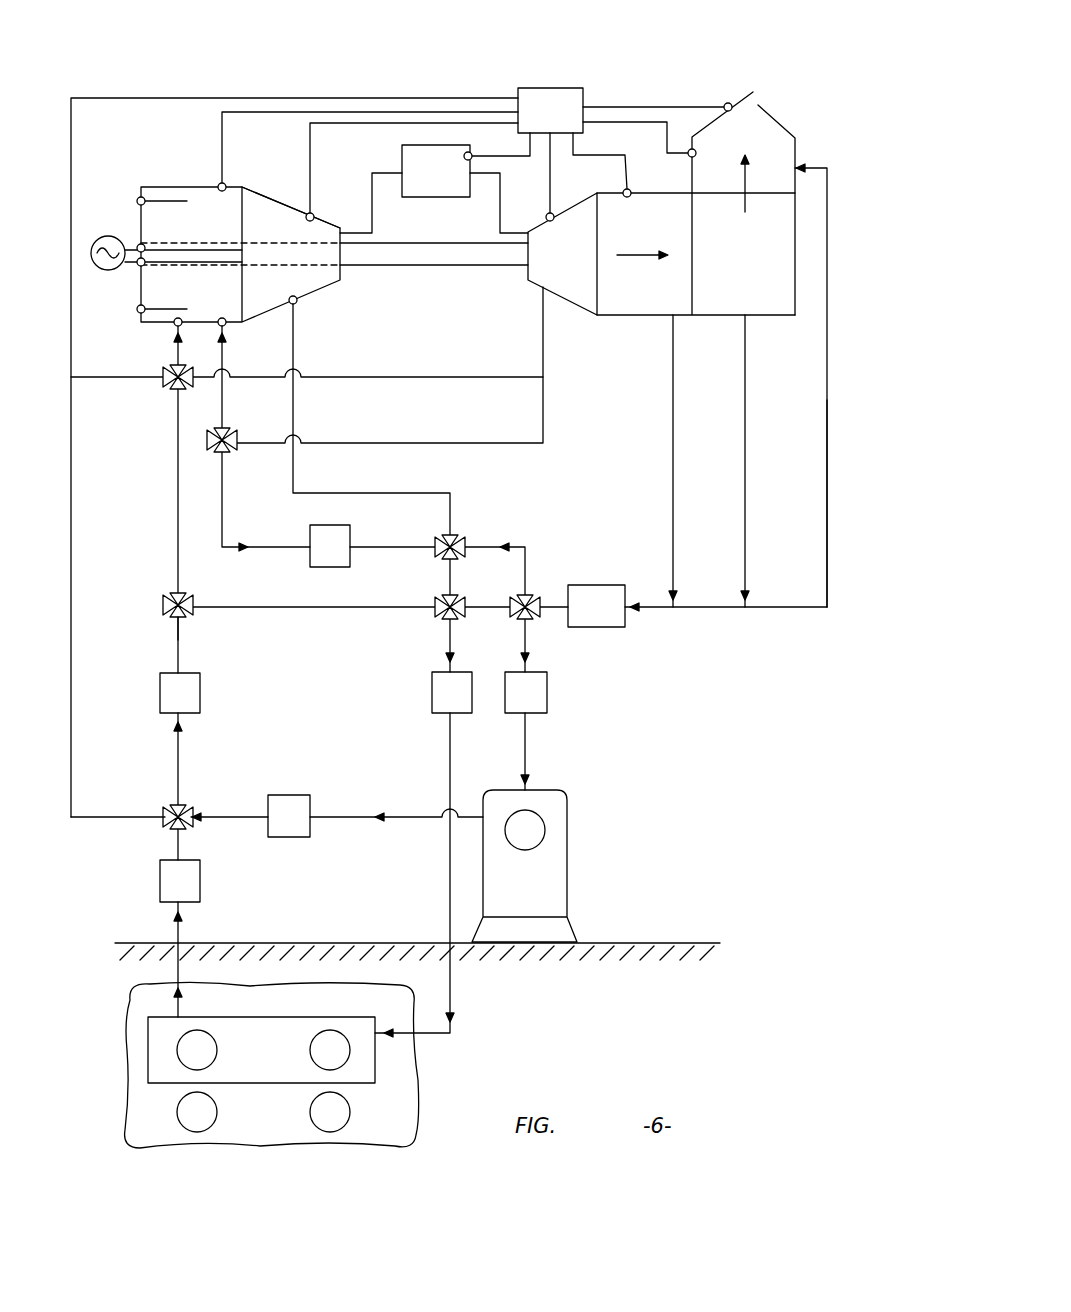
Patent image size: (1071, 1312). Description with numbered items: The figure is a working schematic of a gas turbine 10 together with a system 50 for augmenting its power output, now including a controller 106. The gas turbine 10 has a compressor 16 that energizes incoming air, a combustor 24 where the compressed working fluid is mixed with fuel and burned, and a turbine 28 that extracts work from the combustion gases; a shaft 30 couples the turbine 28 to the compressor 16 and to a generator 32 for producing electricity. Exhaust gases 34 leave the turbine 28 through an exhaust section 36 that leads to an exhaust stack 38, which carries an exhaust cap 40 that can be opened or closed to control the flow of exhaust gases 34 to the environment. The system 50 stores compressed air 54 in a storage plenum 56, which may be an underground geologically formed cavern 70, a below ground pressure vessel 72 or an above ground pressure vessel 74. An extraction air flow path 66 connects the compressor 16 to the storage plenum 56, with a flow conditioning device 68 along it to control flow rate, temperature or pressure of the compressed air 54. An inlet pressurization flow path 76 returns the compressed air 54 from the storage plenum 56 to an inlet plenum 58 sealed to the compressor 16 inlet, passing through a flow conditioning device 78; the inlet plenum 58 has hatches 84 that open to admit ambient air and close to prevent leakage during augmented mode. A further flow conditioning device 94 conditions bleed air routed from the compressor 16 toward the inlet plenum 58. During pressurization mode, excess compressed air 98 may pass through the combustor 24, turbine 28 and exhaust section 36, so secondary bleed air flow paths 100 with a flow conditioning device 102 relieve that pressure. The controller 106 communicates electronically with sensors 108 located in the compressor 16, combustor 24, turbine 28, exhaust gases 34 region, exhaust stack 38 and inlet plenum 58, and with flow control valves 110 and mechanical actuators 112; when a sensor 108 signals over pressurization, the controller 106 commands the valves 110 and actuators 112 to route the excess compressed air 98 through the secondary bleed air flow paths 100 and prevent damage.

The gas turbine 10 is at (322, 80).
The compressor 16 is at (282, 232).
The combustor 24 is at (450, 184).
The turbine 28 is at (574, 262).
The shaft 30 is at (397, 250).
The generator 32 is at (100, 240).
The exhaust gases 34 is at (627, 255).
The exhaust section 36 is at (761, 269).
The exhaust stack 38 is at (797, 158).
The exhaust cap 40 is at (743, 96).
The system 50 is at (150, 622).
The compressed air 54 is at (225, 375).
The storage plenum 56 is at (539, 892).
The inlet plenum 58 is at (243, 186).
The extraction air flow path 66 is at (300, 305).
The flow conditioning device 68 is at (464, 704).
The underground geologically formed cavern 70 is at (130, 1118).
The below ground pressure vessel 72 is at (147, 1068).
The above ground pressure vessel 74 is at (570, 872).
The inlet pressurization flow path 76 is at (152, 390).
The flow conditioning device 78 is at (192, 705).
The hatches 84 is at (141, 200).
The flow conditioning device 94 is at (344, 560).
The excess compressed air 98 is at (746, 442).
The secondary bleed air flow paths 100 is at (746, 378).
The flow conditioning device 102 is at (616, 618).
The controller 106 is at (570, 122).
The sensors 108 is at (473, 154).
The flow control valves 110 is at (168, 372).
The mechanical actuators 112 is at (726, 103).